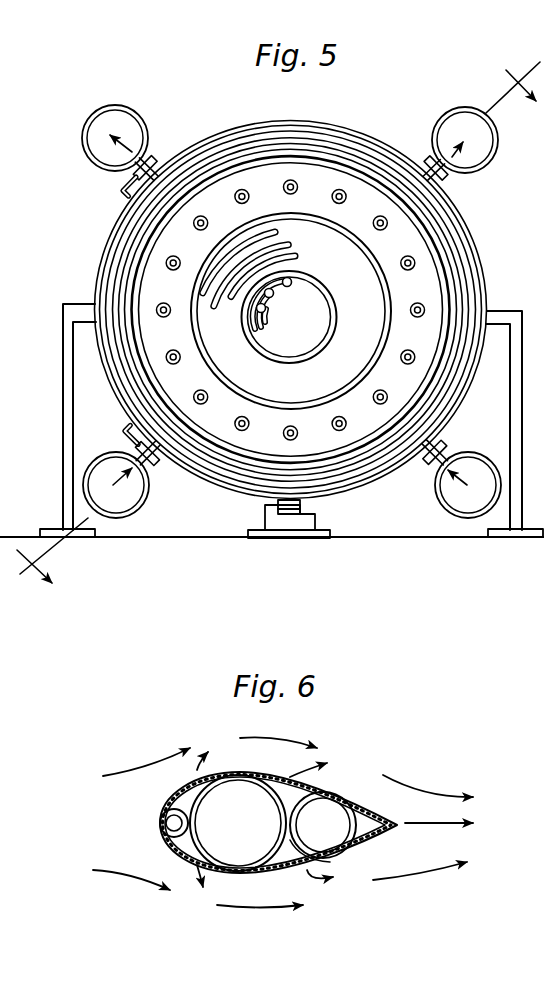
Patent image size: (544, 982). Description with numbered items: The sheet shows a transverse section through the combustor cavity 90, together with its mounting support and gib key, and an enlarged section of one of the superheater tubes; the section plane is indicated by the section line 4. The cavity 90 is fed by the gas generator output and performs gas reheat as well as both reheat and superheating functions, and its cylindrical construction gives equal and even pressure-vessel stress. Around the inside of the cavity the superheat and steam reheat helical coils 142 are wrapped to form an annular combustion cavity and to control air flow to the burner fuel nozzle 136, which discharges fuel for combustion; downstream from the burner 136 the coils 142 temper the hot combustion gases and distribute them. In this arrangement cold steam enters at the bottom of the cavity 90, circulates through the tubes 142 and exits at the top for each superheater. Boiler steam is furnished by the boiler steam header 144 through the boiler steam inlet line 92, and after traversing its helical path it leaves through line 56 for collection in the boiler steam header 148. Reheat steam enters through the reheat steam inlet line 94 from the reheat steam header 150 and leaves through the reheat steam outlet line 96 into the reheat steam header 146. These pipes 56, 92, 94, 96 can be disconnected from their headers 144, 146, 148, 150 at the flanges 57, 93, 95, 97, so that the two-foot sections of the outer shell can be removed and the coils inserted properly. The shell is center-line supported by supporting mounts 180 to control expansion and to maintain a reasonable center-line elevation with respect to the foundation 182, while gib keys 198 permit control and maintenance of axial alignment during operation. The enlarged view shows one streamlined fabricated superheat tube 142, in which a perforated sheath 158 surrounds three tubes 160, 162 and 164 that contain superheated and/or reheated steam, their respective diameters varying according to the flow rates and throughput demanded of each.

In FIG. 5, the section line 4- 4 is at (280, 334).
In FIG. 5, the boiler steam outlet line 56 is at (162, 172).
In FIG. 5, the flange 57 is at (137, 175).
In FIG. 5, the cavity 90 is at (243, 500).
In FIG. 5, the boiler steam inlet line 92 is at (168, 472).
In FIG. 5, the flange 93 is at (143, 481).
In FIG. 5, the reheat steam inlet line 94 is at (438, 432).
In FIG. 5, the flange 95 is at (441, 450).
In FIG. 5, the reheat steam outlet line 96 is at (443, 183).
In FIG. 5, the flange 97 is at (424, 160).
In FIG. 5, the fuel nozzle 136 is at (293, 181).
In FIG. 5, the superheat and steam reheat helical coils 142 is at (253, 152).
In FIG. 6, the superheat and steam reheat helical coils 142 is at (353, 777).
In FIG. 5, the boiler steam header 144 is at (101, 463).
In FIG. 5, the reheat steam header 146 is at (452, 124).
In FIG. 5, the boiler steam header 148 is at (116, 127).
In FIG. 5, the reheat steam header 150 is at (444, 502).
In FIG. 6, the perforated sheath 158 is at (180, 860).
In FIG. 6, the tube 160 is at (180, 793).
In FIG. 6, the tube 162 is at (291, 778).
In FIG. 6, the tube 164 is at (357, 817).
In FIG. 5, the supporting mounts 180 is at (44, 395).
In FIG. 5, the foundation 182 is at (86, 538).
In FIG. 5, the gib keys 198 is at (308, 510).